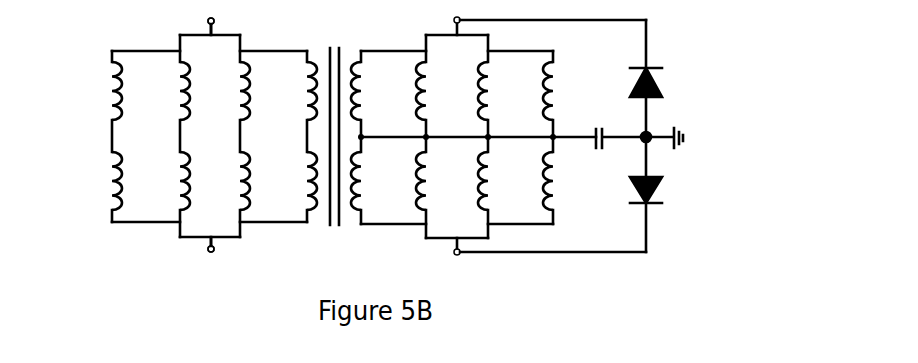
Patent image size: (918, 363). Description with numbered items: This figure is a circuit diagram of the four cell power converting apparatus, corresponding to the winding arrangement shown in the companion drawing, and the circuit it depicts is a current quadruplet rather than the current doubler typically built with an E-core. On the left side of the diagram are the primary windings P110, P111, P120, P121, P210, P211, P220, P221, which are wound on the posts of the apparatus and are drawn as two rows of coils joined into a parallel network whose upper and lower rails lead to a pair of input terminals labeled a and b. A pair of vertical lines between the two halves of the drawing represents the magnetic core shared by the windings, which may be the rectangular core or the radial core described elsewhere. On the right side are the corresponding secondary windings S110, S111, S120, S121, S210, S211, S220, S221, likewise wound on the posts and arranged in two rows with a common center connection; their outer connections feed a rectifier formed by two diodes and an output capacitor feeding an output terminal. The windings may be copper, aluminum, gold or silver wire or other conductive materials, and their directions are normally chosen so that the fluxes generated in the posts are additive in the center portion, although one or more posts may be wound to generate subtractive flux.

The primary winding P111 is at (96, 91).
The primary winding P110 is at (164, 91).
The primary winding P221 is at (225, 91).
The primary winding P220 is at (291, 91).
The primary winding P211 is at (96, 181).
The primary winding P120 is at (164, 181).
The primary winding P121 is at (225, 181).
The primary winding P210 is at (291, 181).
The secondary winding S111 is at (376, 91).
The secondary winding S110 is at (441, 91).
The secondary winding S221 is at (503, 91).
The secondary winding S220 is at (568, 91).
The secondary winding S211 is at (376, 181).
The secondary winding S120 is at (441, 181).
The secondary winding S121 is at (502, 181).
The secondary winding S210 is at (568, 181).
The primary input terminal a is at (204, 23).
The primary input terminal b is at (204, 248).